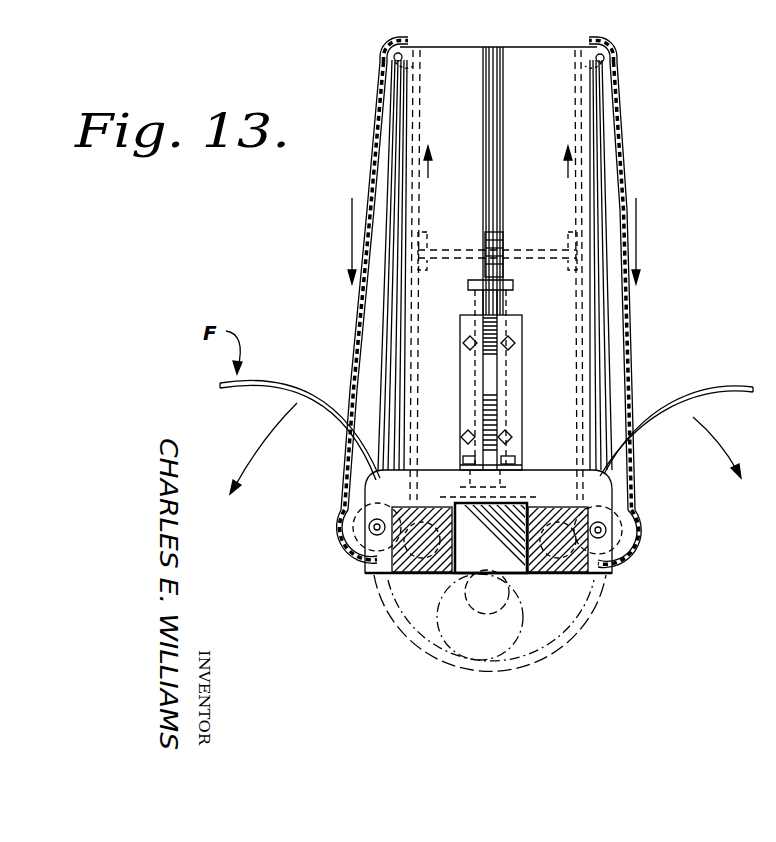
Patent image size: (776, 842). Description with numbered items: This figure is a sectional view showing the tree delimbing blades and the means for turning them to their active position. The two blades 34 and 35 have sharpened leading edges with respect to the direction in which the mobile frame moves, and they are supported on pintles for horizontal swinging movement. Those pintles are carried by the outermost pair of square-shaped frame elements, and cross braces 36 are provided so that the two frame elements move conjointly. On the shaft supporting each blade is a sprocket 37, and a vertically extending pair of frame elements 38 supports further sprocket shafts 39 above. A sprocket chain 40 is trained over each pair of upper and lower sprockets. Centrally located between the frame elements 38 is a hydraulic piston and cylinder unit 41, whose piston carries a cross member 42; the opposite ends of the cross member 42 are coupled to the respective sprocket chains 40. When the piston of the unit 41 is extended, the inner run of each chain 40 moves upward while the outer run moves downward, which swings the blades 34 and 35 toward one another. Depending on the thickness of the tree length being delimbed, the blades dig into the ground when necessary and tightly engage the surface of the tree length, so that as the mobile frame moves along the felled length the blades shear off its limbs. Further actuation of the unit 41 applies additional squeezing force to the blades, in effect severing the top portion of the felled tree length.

The delimbing blade 34 is at (284, 379).
The delimbing blade 35 is at (732, 389).
The cross braces 36 is at (535, 476).
The sprocket 37 is at (352, 527).
The frame elements 38 is at (400, 162).
The sprocket shafts 39 is at (403, 54).
The sprocket chain 40 is at (379, 80).
The hydraulic piston and cylinder unit 41 is at (510, 304).
The cross member 42 is at (455, 250).